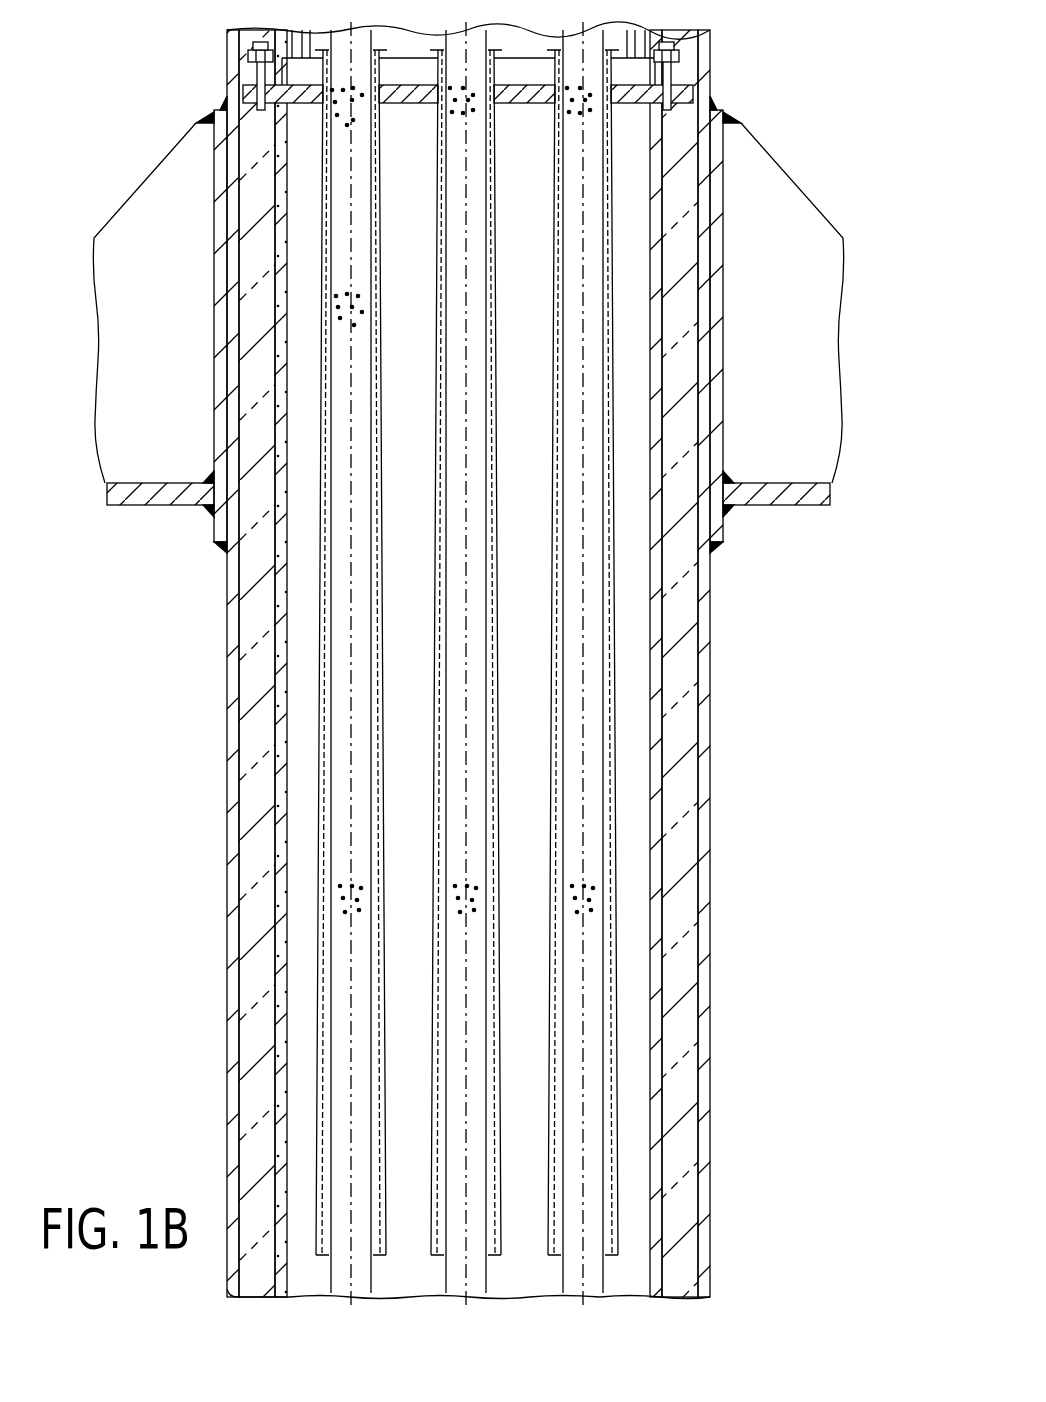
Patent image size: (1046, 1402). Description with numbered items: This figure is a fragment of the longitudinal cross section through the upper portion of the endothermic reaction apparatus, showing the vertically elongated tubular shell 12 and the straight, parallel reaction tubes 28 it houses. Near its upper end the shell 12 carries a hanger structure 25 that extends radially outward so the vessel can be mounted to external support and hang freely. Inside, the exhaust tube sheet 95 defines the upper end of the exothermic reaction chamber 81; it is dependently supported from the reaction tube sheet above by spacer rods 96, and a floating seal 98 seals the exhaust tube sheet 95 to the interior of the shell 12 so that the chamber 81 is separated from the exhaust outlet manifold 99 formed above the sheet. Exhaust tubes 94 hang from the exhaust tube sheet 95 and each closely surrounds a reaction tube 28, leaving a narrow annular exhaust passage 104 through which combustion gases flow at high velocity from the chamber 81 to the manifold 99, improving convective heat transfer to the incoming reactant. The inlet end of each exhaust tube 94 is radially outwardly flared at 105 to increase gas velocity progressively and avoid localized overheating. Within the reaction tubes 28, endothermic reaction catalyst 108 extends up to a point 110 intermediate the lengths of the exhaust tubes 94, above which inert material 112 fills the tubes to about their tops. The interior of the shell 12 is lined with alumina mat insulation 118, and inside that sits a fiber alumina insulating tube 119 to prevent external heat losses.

The tubular shell 12 is at (705, 996).
The hanger structure 25 is at (130, 516).
The reaction tubes 28 is at (556, 1281).
The exothermic reaction chamber 81 is at (636, 1282).
The exhaust tubes 94 is at (553, 683).
The exhaust tube sheet 95 is at (532, 98).
The spacer rods 96 is at (633, 36).
The floating seal 98 is at (246, 85).
The exhaust outlet manifold 99 is at (413, 43).
The annular exhaust passage 104 is at (330, 880).
The flared inlet end 105 is at (433, 1223).
The endothermic reaction catalyst 108 is at (595, 943).
The point intermediate the lengths of the exhaust tubes 110 is at (340, 880).
The inert material 112 is at (355, 300).
The alumina mat insulation 118 is at (682, 630).
The fiber alumina insulating tube 119 is at (657, 687).